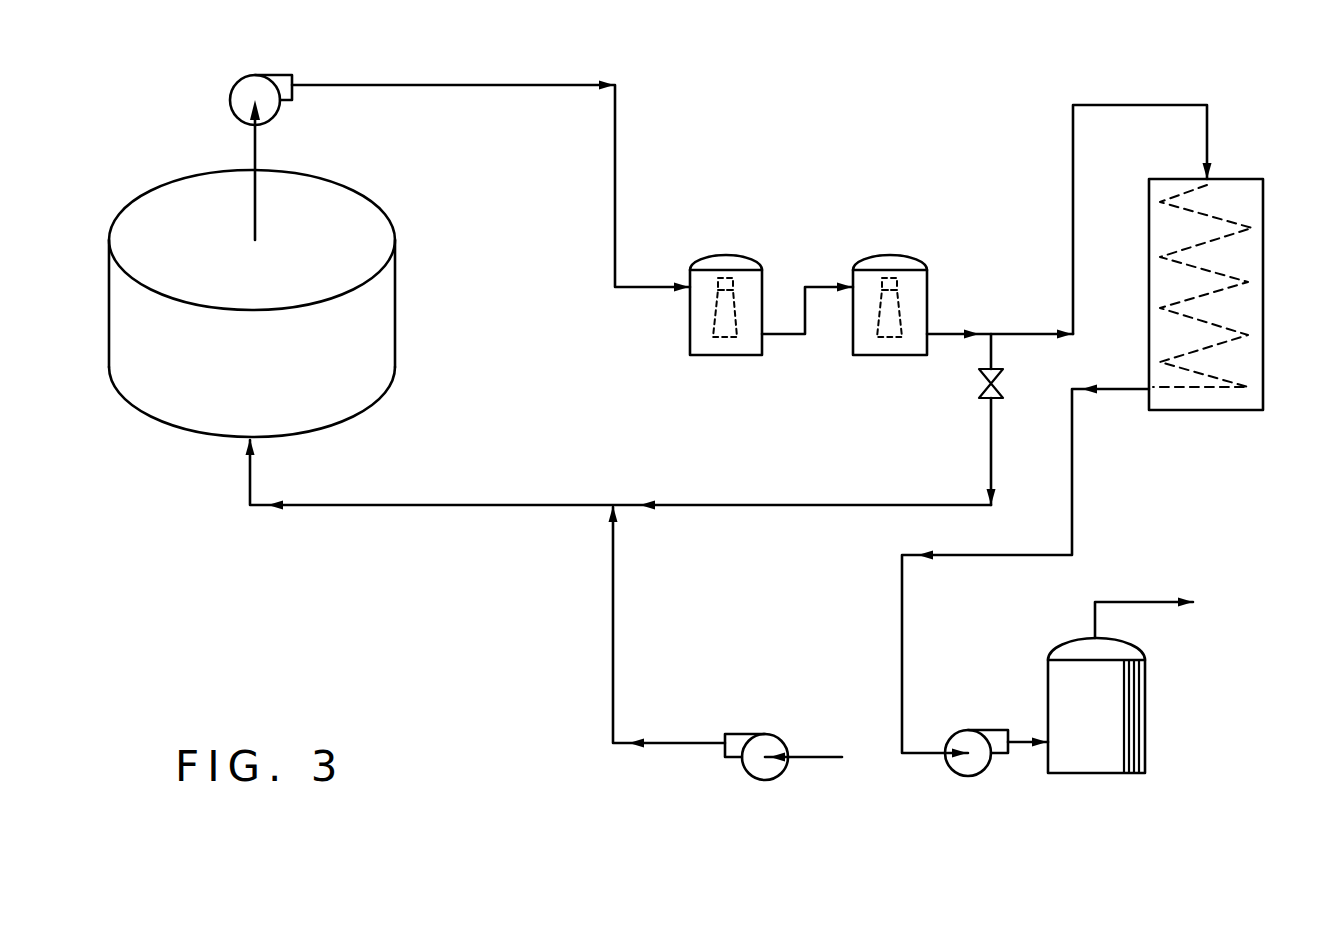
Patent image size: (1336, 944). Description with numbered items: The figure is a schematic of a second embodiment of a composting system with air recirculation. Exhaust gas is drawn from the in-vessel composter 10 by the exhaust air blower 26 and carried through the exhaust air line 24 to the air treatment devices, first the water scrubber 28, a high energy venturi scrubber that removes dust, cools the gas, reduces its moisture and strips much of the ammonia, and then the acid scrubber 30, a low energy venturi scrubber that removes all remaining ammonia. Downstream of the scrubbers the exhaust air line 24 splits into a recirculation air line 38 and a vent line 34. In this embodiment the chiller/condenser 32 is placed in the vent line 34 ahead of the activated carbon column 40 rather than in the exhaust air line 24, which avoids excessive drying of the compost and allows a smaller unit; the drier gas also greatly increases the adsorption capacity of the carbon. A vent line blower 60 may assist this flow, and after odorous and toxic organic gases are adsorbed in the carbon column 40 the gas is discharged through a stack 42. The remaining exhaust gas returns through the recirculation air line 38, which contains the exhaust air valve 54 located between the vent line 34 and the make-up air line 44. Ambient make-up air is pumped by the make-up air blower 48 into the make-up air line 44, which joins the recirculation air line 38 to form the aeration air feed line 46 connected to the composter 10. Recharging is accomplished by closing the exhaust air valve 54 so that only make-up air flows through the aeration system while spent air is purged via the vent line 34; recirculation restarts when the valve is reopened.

The in-vessel composter 10 is at (252, 303).
The exhaust air line 24 is at (258, 152).
The exhaust air blower 26 is at (248, 76).
The water scrubber 28 is at (715, 255).
The acid scrubber 30 is at (880, 255).
The chiller/condenser 32 is at (1263, 185).
The vent line 34 is at (1073, 170).
The recirculation air line 38 is at (991, 440).
The activated carbon column 40 is at (1145, 703).
The stack 42 is at (1135, 602).
The make-up air line 44 is at (613, 610).
The aeration air feed line 46 is at (412, 507).
The make-up air blower 48 is at (750, 732).
The exhaust air valve 54 is at (994, 386).
The vent line blower 60 is at (950, 730).